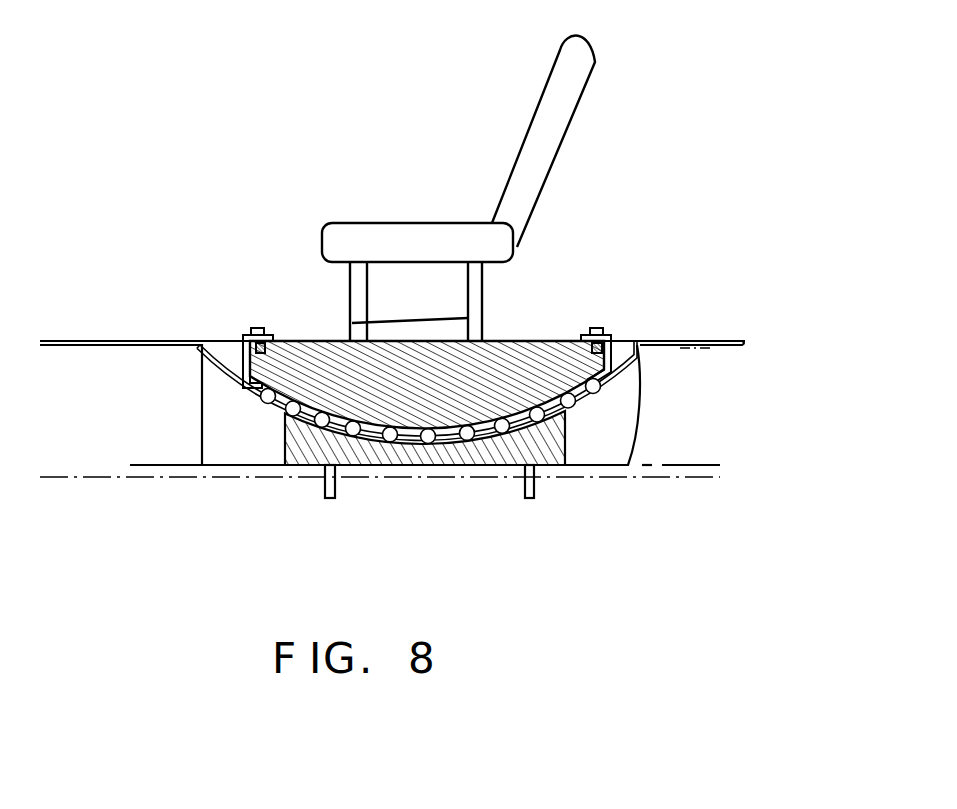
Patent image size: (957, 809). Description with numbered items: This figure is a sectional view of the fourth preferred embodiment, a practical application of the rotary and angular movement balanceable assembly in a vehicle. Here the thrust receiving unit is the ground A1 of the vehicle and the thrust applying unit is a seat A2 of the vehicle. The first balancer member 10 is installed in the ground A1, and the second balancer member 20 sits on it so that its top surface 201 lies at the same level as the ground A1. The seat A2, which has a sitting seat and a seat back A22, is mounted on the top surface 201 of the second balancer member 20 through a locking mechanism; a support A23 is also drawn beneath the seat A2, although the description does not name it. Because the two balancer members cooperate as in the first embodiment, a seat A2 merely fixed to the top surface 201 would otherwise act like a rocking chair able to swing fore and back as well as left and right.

The ground of a vehicle A1 is at (695, 408).
The seat of a vehicle A2 is at (512, 188).
The seat back A22 is at (556, 141).
The seat support A23 is at (447, 300).
The second balancer member 20 is at (333, 375).
The top surface 201 is at (535, 340).
The first balancer member 10 is at (475, 457).